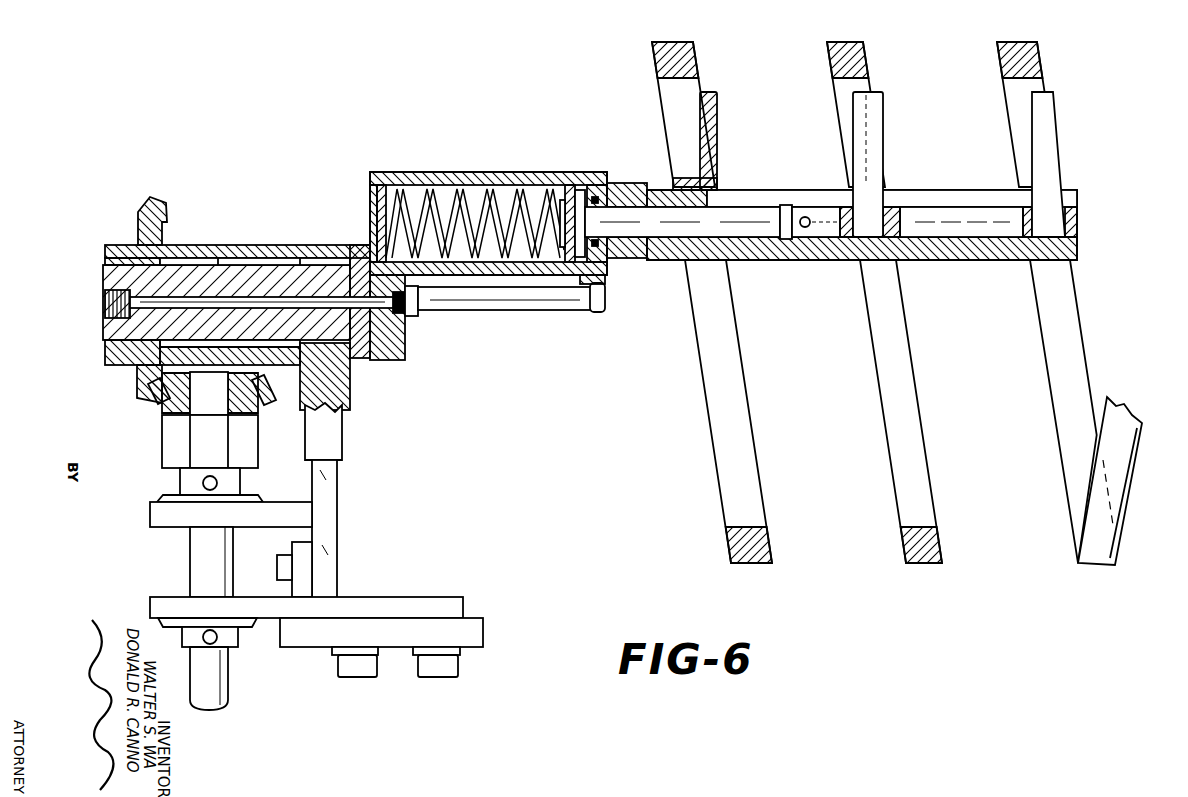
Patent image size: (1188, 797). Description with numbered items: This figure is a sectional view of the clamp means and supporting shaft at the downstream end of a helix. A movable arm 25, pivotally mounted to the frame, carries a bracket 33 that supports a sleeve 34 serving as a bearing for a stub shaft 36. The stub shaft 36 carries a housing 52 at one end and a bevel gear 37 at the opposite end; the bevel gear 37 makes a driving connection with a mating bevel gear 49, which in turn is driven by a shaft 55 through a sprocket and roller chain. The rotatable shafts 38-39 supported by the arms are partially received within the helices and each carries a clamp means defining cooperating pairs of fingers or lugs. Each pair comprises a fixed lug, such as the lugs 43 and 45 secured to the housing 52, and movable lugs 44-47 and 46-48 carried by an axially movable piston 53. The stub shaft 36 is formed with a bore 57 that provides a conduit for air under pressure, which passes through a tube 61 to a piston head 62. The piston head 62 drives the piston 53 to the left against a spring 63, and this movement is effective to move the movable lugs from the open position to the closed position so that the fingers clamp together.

The movable arm 25 is at (400, 640).
The bracket 33 is at (175, 600).
The sleeve 34 is at (278, 355).
The stub shaft 36 is at (238, 275).
The bevel gear 37 is at (148, 212).
The rotatable shafts 38-39 is at (644, 172).
The fixed lug 43 is at (712, 128).
The movable lugs 44-47 is at (905, 248).
The fixed lug 45 is at (848, 190).
The movable lugs 46-48 is at (1050, 217).
The mating bevel gear 49 is at (160, 395).
The housing 52 is at (770, 262).
The piston 53 is at (690, 215).
The shaft 55 is at (218, 683).
The bore 57 is at (300, 300).
The tube 61 is at (490, 300).
The piston head 62 is at (578, 245).
The spring 63 is at (480, 195).